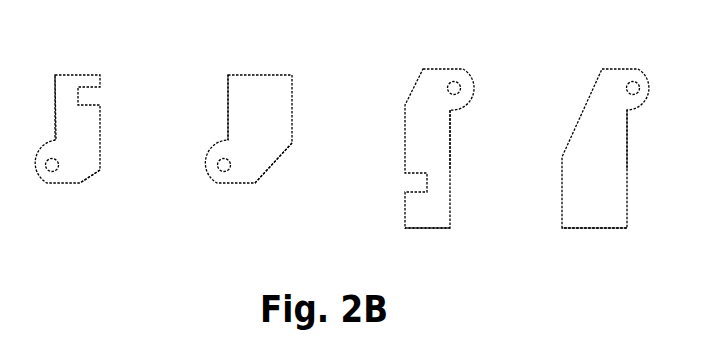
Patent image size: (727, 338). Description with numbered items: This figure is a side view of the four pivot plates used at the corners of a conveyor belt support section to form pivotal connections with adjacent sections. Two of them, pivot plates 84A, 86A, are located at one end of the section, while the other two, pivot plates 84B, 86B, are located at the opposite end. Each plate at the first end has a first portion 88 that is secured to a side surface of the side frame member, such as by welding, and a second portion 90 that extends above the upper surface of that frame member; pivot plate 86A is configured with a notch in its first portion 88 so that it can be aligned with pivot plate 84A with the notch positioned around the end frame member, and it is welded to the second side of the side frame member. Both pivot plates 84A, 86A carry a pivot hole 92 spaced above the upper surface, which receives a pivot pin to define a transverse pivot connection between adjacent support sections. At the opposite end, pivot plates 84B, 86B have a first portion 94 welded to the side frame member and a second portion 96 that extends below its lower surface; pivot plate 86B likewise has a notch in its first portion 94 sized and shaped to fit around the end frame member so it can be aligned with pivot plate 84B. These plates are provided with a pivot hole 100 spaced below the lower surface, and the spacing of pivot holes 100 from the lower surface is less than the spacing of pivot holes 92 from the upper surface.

The pivot plate 86B is at (75, 74).
The pivot plate 84B is at (258, 74).
The pivot plate 86A is at (443, 68).
The pivot plate 84A is at (618, 68).
The first portion 94 is at (62, 96).
The second portion 96 is at (80, 170).
The pivot hole 100 is at (50, 168).
The pivot hole 92 is at (458, 86).
The second portion 90 is at (436, 130).
The first portion 88 is at (436, 216).